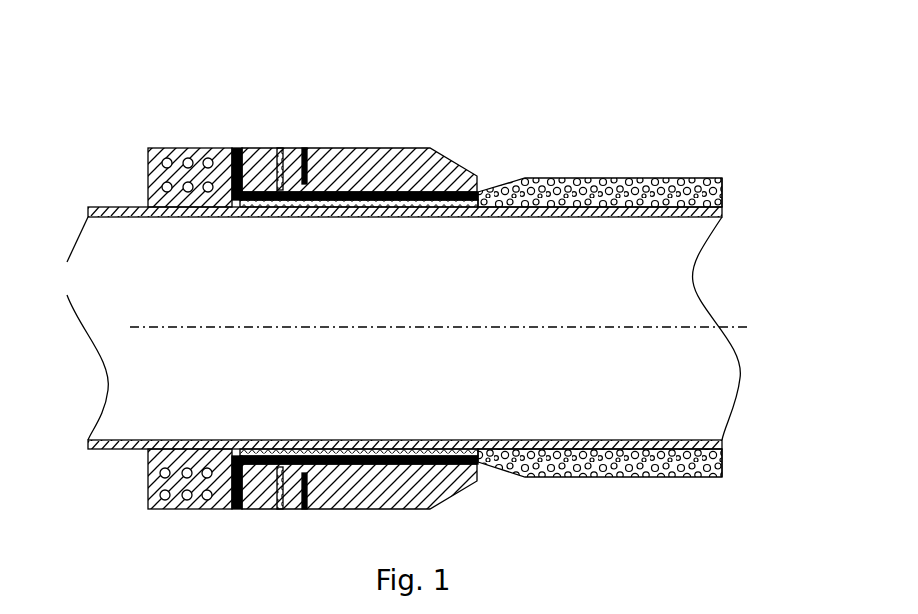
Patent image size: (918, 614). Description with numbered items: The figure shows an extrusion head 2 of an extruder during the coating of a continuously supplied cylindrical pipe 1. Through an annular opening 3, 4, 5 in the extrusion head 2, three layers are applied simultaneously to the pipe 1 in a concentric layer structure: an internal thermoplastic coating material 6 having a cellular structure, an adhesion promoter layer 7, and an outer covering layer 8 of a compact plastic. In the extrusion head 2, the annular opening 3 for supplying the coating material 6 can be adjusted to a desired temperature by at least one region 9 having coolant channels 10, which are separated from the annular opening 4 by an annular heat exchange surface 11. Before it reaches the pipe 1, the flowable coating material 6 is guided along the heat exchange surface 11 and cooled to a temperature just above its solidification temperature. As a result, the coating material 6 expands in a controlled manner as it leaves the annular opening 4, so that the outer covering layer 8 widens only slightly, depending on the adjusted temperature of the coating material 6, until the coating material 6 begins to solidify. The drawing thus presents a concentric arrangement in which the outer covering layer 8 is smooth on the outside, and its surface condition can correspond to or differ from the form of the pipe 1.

The pipe 1 is at (89, 212).
The extrusion head 2 is at (312, 287).
The annular opening 3 is at (255, 196).
The annular opening 4 is at (291, 193).
The annular opening 5 is at (360, 182).
The coating material 6 is at (724, 190).
The adhesion promoter layer 7 is at (724, 476).
The outer covering layer 8 is at (688, 176).
The region 9 is at (146, 177).
The coolant channels 10 is at (209, 156).
The heat exchange surface 11 is at (430, 209).